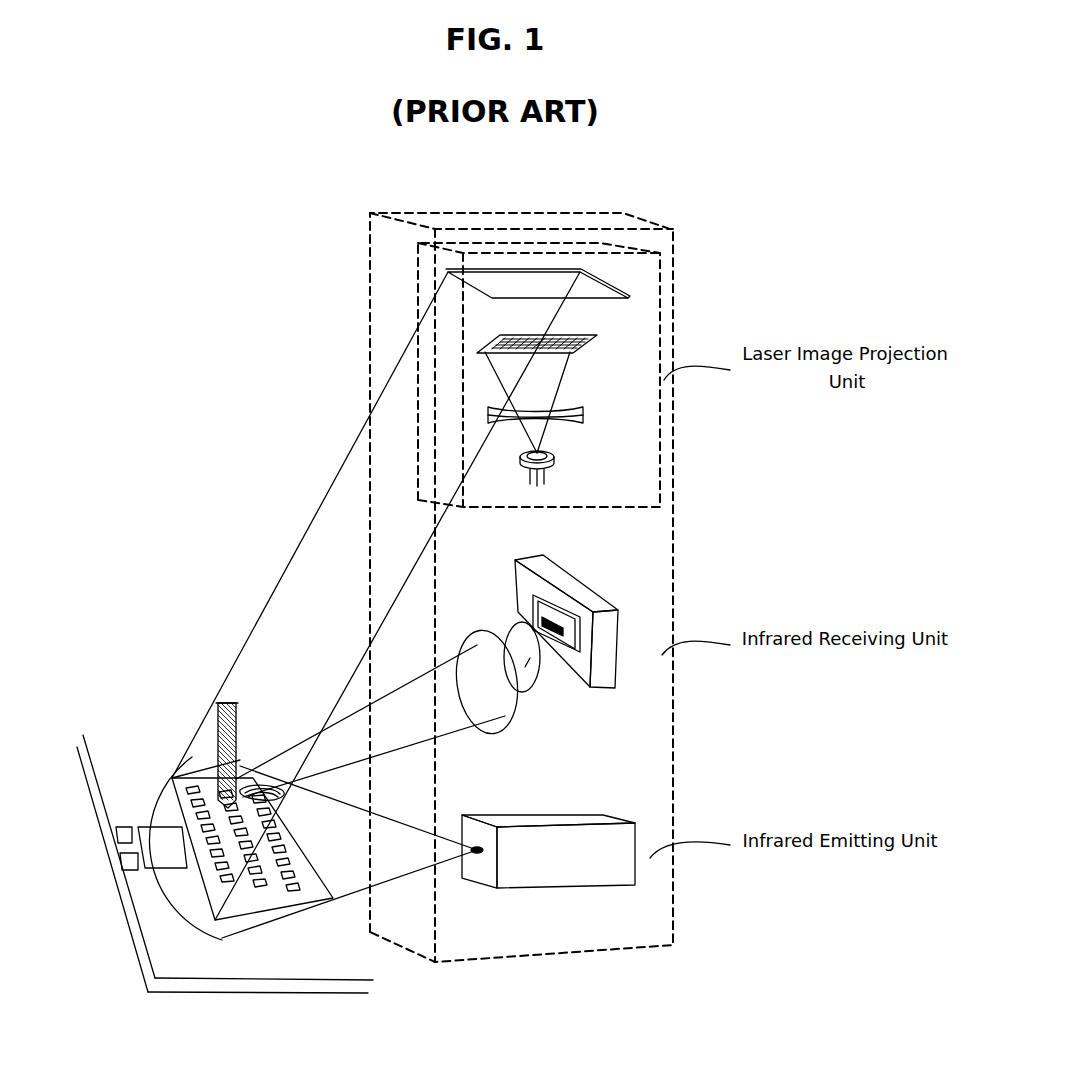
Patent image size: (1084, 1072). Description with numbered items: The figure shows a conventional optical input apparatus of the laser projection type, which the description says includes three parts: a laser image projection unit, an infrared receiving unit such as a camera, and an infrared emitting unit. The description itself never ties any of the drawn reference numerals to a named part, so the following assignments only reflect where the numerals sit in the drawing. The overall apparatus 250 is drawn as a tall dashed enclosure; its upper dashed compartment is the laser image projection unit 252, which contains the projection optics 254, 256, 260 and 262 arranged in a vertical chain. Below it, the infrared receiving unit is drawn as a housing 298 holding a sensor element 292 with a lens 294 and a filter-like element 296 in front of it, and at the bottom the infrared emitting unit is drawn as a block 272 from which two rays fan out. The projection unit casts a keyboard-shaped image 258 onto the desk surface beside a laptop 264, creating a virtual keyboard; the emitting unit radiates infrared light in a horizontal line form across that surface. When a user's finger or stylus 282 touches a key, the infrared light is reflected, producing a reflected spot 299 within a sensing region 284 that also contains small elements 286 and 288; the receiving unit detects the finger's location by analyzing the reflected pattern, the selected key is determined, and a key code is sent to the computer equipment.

The virtual keyboard apparatus housing 250 is at (582, 218).
The laser image projection unit 252 is at (661, 329).
The laser diode 254 is at (556, 455).
The diffraction grating 256 is at (596, 351).
The projected keyboard image 258 is at (257, 902).
The lens 260 is at (584, 416).
The mirror 262 is at (598, 275).
The portable terminal (laptop) 264 is at (172, 968).
The infrared emitter 272 is at (603, 877).
The input object (finger/pen) 282 is at (236, 737).
The sensing region 284 is at (158, 896).
The small keys/windows 286 is at (124, 834).
The module 288 is at (128, 861).
The infrared sensor 292 is at (560, 622).
The receiving lens 294 is at (503, 730).
The infrared filter 296 is at (537, 680).
The sensor housing 298 is at (613, 688).
The reflected infrared light spot 299 is at (280, 797).